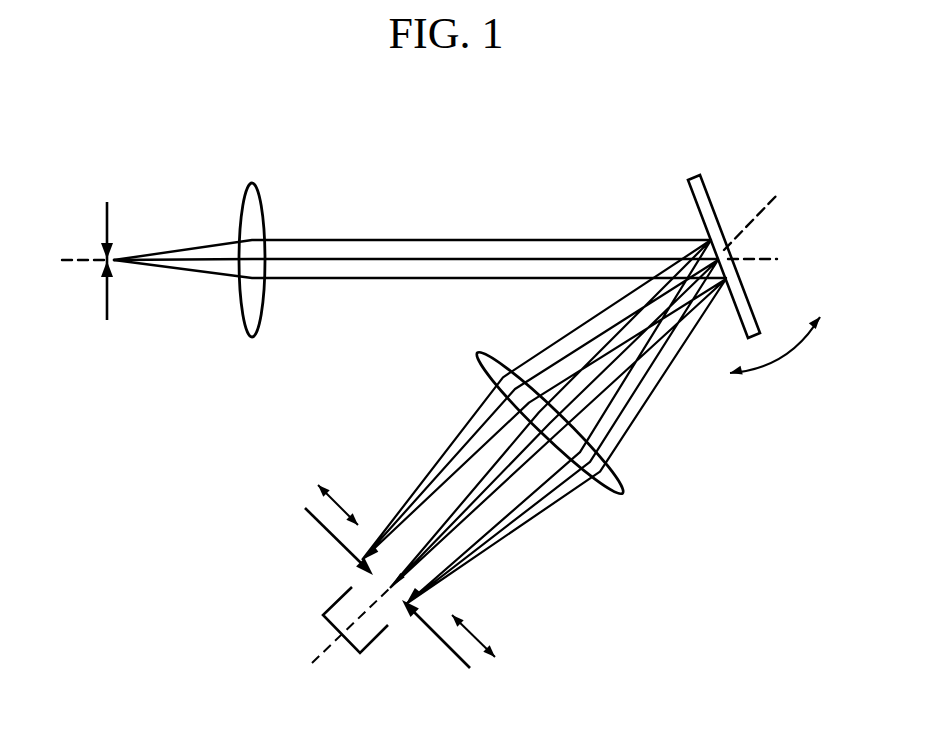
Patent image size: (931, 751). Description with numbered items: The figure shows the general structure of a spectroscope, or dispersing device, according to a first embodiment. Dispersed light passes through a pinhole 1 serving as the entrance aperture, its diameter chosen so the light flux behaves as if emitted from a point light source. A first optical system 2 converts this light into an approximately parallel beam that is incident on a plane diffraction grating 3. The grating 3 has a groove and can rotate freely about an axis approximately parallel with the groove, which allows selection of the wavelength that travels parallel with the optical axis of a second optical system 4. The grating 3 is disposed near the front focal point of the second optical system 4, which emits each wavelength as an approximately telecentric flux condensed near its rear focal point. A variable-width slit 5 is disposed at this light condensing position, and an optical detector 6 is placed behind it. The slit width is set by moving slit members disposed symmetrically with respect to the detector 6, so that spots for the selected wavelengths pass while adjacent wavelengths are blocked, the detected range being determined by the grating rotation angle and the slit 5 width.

The pinhole 1 is at (105, 232).
The first optical system 2 is at (262, 208).
The plane diffraction grating 3 is at (715, 208).
The second optical system 4 is at (625, 463).
The variable-width slit 5 is at (332, 538).
The optical detector 6 is at (330, 627).